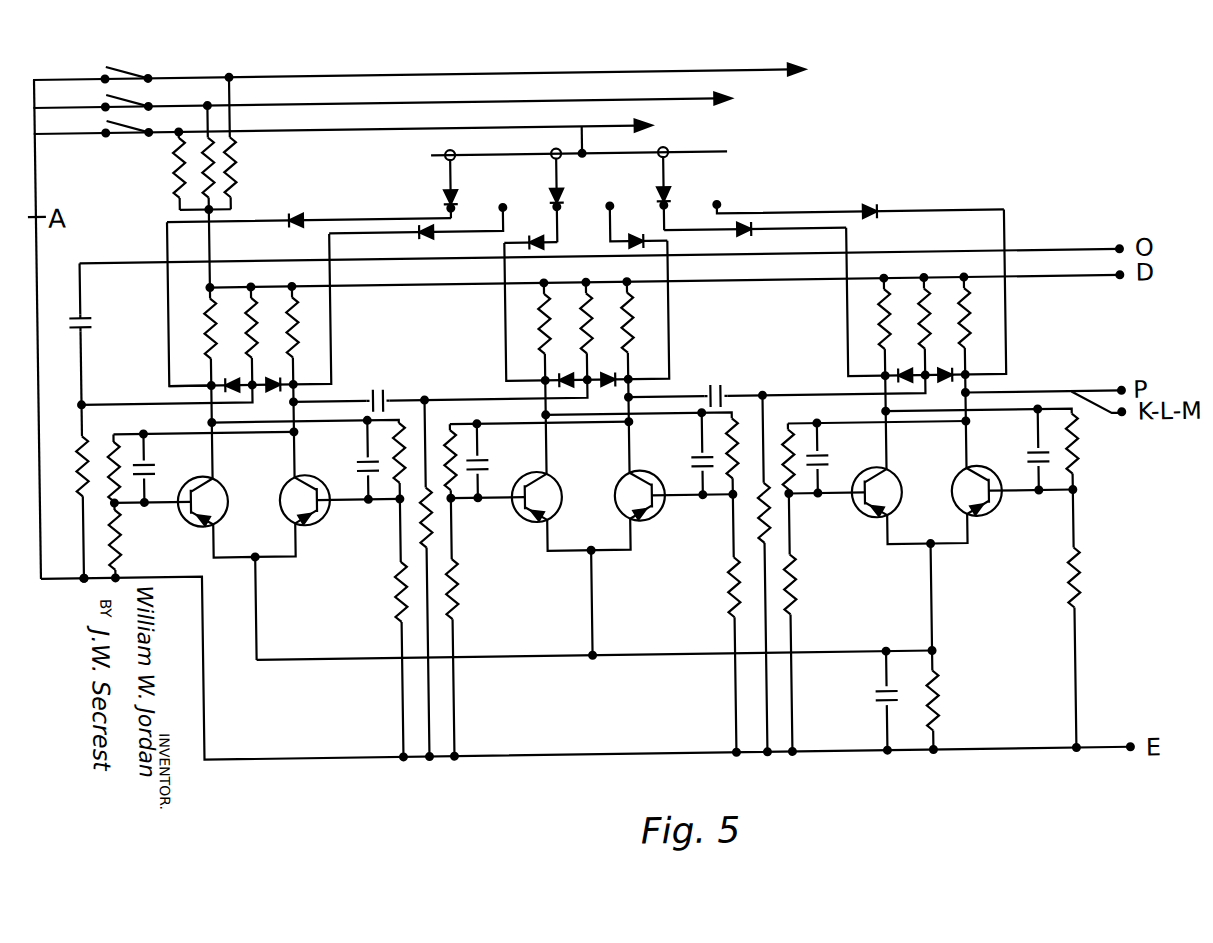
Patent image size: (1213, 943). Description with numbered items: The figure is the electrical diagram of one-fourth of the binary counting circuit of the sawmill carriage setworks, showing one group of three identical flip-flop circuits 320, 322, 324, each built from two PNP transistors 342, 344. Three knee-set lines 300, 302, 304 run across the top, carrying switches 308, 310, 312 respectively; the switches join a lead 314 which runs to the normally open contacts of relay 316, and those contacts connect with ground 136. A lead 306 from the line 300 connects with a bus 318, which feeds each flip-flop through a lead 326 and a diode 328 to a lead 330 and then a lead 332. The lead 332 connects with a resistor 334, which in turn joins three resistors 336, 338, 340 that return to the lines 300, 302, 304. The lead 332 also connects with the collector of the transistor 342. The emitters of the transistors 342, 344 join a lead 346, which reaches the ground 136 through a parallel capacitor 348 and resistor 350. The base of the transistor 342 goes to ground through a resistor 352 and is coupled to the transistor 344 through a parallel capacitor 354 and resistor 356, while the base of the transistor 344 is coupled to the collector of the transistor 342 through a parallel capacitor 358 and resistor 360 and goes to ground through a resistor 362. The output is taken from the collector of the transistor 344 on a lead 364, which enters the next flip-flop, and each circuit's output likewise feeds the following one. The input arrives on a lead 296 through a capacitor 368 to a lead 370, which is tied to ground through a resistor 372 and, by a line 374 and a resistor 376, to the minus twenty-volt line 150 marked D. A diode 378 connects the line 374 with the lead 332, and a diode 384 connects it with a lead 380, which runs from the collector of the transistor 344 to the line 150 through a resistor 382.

The ground 136 is at (55, 578).
The line 150 is at (1048, 290).
The lead 296 is at (1090, 238).
The line 300 is at (553, 134).
The line 302 is at (620, 108).
The line 304 is at (695, 80).
The lead 306 is at (584, 160).
The switch 308 is at (118, 128).
The switch 310 is at (146, 102).
The switch 312 is at (127, 74).
The lead 314 is at (38, 164).
The relay 316 is at (36, 218).
The bus 318 is at (474, 161).
The flip-flop circuit 320 is at (237, 547).
The flip-flop circuit 322 is at (571, 544).
The flip-flop circuit 324 is at (948, 547).
The lead 326 is at (548, 175).
The diode 328 is at (298, 220).
The lead 330 is at (168, 284).
The lead 332 is at (222, 383).
The resistor 334 is at (205, 308).
The resistor 336 is at (178, 165).
The resistor 338 is at (232, 173).
The resistor 340 is at (236, 153).
The PNP transistor 342 is at (216, 494).
The PNP transistor 344 is at (280, 504).
The lead 346 is at (318, 645).
The capacitor 348 is at (878, 706).
The resistor 350 is at (938, 690).
The resistor 352 is at (112, 548).
The capacitor 354 is at (150, 476).
The resistor 356 is at (108, 442).
The capacitor 358 is at (360, 470).
The resistor 360 is at (394, 486).
The resistor 362 is at (393, 588).
The lead 364 is at (342, 404).
The capacitor 368 is at (66, 320).
The lead 370 is at (82, 377).
The resistor 372 is at (80, 452).
The line 374 is at (112, 408).
The resistor 376 is at (248, 303).
The diode 378 is at (568, 366).
The lead 380 is at (287, 455).
The resistor 382 is at (290, 303).
The diode 384 is at (608, 365).